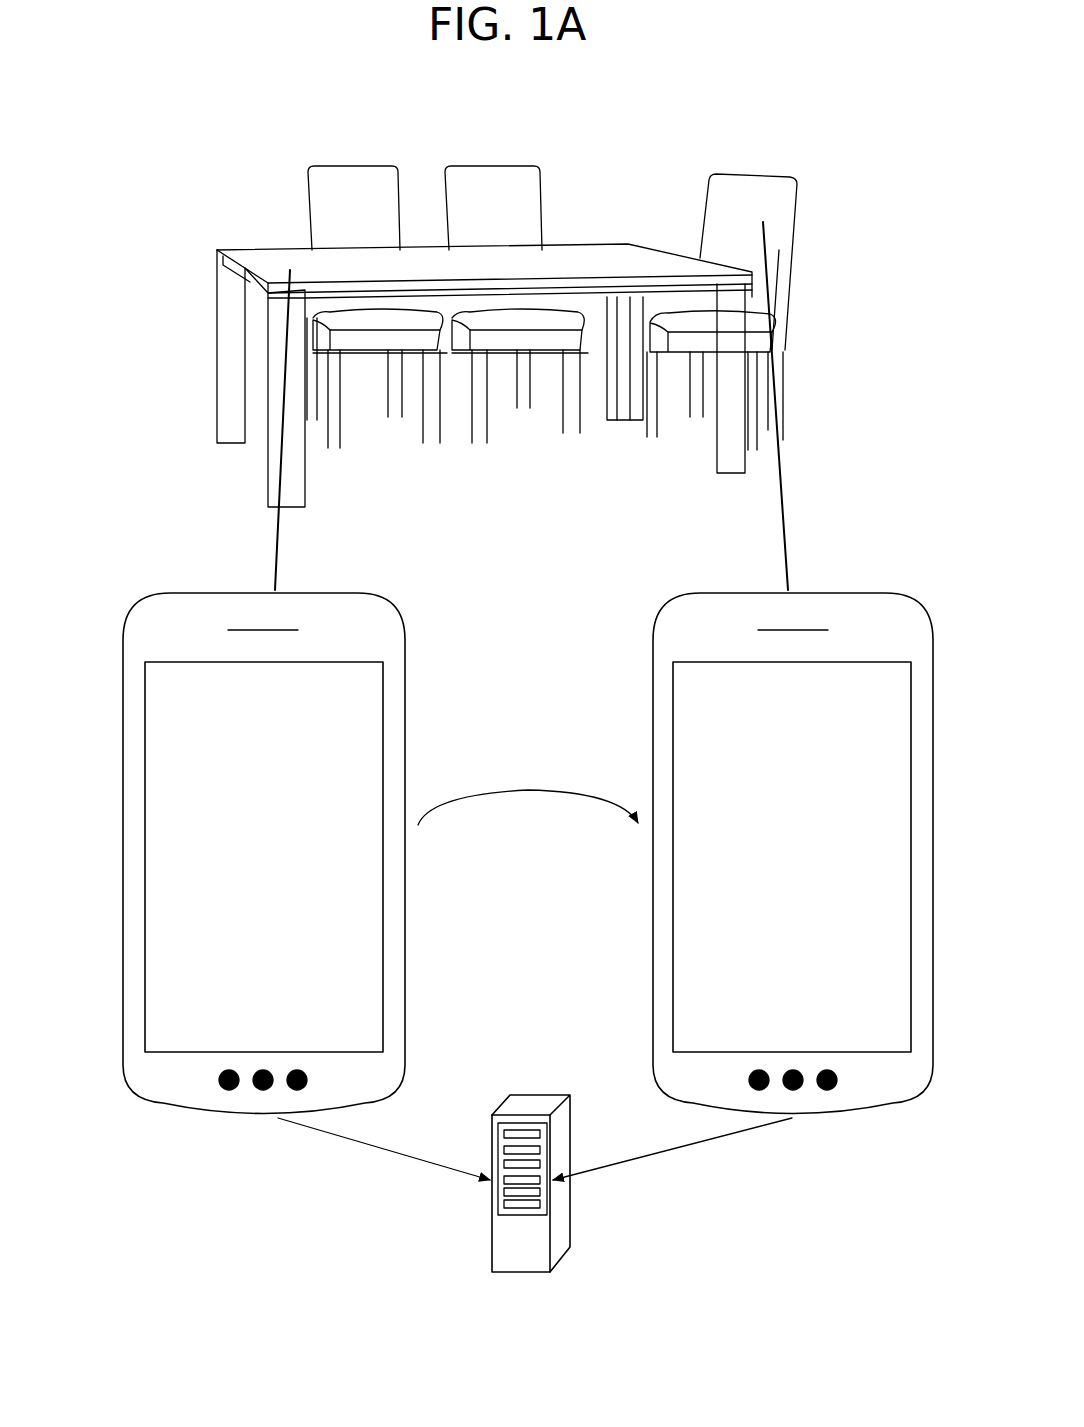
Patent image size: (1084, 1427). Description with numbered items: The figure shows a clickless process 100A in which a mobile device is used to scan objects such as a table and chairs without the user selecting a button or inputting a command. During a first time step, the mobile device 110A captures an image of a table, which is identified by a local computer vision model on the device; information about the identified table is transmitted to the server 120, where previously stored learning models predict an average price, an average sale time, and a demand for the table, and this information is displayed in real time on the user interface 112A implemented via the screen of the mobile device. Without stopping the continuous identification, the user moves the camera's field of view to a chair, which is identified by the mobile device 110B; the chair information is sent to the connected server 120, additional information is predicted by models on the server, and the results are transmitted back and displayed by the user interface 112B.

The clickless process 100A is at (105, 104).
The mobile device 110A is at (192, 637).
The mobile device 110B is at (722, 637).
The user interface 112A is at (290, 889).
The user interface 112B is at (818, 889).
The server 120 is at (523, 1202).